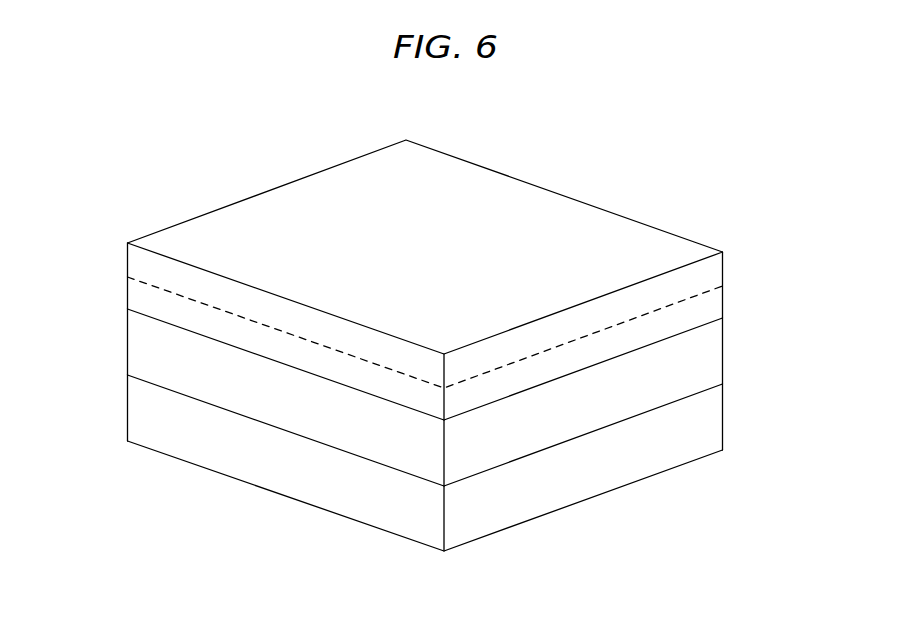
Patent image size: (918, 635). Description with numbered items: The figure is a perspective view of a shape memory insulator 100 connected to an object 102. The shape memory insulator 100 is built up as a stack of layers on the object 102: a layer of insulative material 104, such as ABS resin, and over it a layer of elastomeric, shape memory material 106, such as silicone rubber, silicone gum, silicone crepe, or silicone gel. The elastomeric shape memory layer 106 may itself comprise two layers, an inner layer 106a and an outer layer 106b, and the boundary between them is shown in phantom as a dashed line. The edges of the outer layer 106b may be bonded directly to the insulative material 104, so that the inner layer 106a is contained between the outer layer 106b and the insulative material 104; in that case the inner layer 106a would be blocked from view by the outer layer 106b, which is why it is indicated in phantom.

The shape memory insulator 100 is at (117, 243).
The object 102 is at (127, 410).
The layer of insulative material 104 is at (228, 385).
The layer of elastomeric, shape memory material 106 is at (286, 337).
The inner layer 106a is at (705, 300).
The outer layer 106b is at (705, 271).